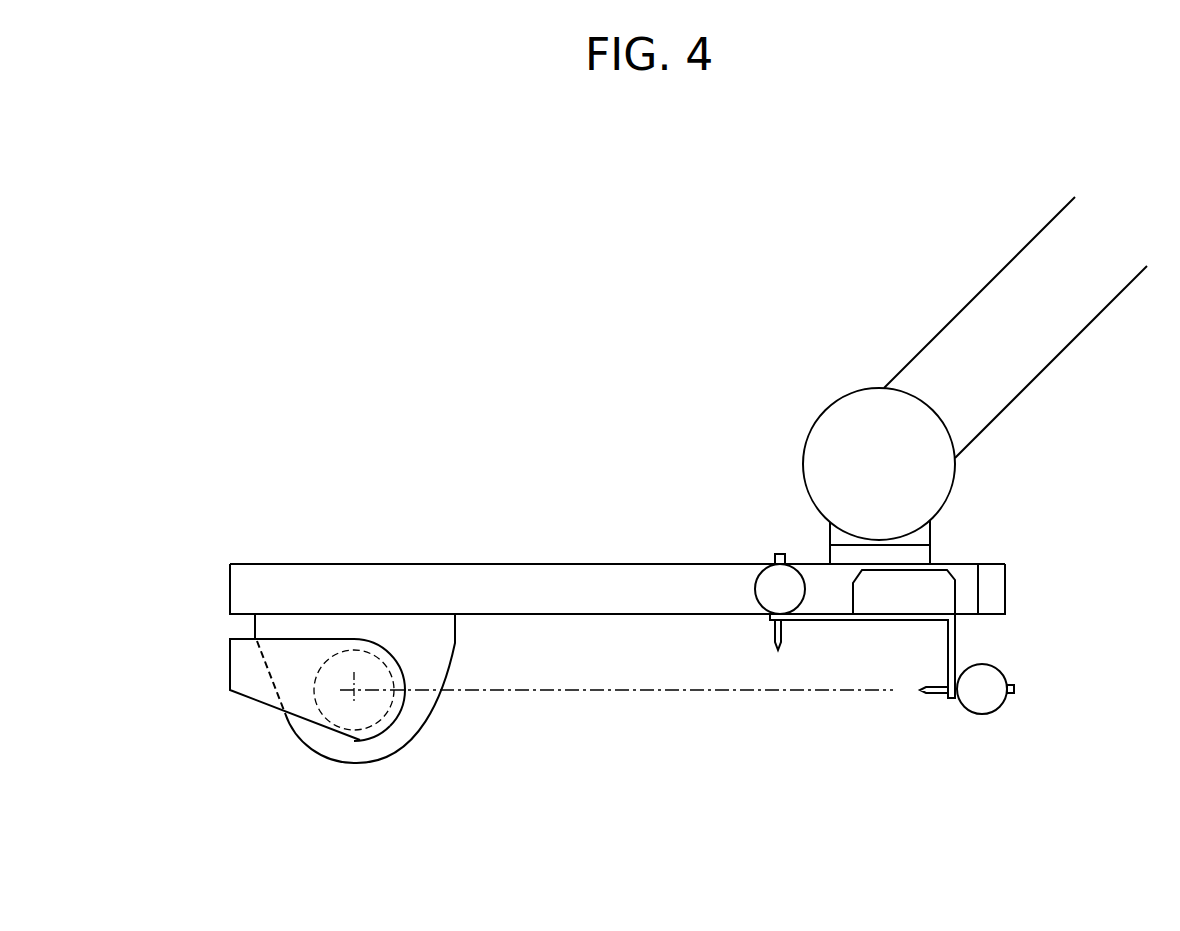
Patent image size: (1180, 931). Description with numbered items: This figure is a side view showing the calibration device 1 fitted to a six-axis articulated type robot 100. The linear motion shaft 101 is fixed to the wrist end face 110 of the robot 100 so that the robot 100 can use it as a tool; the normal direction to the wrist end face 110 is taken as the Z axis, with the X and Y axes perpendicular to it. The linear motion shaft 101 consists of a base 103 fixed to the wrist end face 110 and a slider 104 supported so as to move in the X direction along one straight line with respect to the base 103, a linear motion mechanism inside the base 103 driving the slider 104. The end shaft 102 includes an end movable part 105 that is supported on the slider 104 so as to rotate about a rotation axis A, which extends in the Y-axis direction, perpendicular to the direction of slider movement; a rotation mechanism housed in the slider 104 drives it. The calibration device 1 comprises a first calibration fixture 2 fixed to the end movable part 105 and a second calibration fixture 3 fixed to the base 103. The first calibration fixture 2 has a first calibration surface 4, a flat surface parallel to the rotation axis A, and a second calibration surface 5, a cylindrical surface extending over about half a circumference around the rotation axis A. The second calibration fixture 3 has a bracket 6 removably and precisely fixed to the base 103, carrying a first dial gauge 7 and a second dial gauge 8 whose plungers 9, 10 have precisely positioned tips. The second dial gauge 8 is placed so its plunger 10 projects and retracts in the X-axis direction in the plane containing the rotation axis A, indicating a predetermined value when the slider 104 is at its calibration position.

The calibration device 1 is at (690, 631).
The first calibration fixture 2 is at (538, 674).
The second calibration fixture 3 is at (960, 687).
The first calibration surface 4 is at (310, 640).
The second calibration surface 5 is at (403, 707).
The bracket 6 is at (956, 638).
The first dial gauge 7 is at (756, 588).
The second dial gauge 8 is at (982, 715).
The plunger 9 is at (773, 636).
The plunger 10 is at (930, 698).
The robot 100 is at (956, 435).
The linear motion shaft 101 is at (575, 555).
The end shaft 102 is at (355, 748).
The base 103 is at (475, 564).
The slider 104 is at (455, 665).
The end movable part 105 is at (328, 720).
The wrist end face 110 is at (887, 546).
The rotation axis A is at (614, 683).